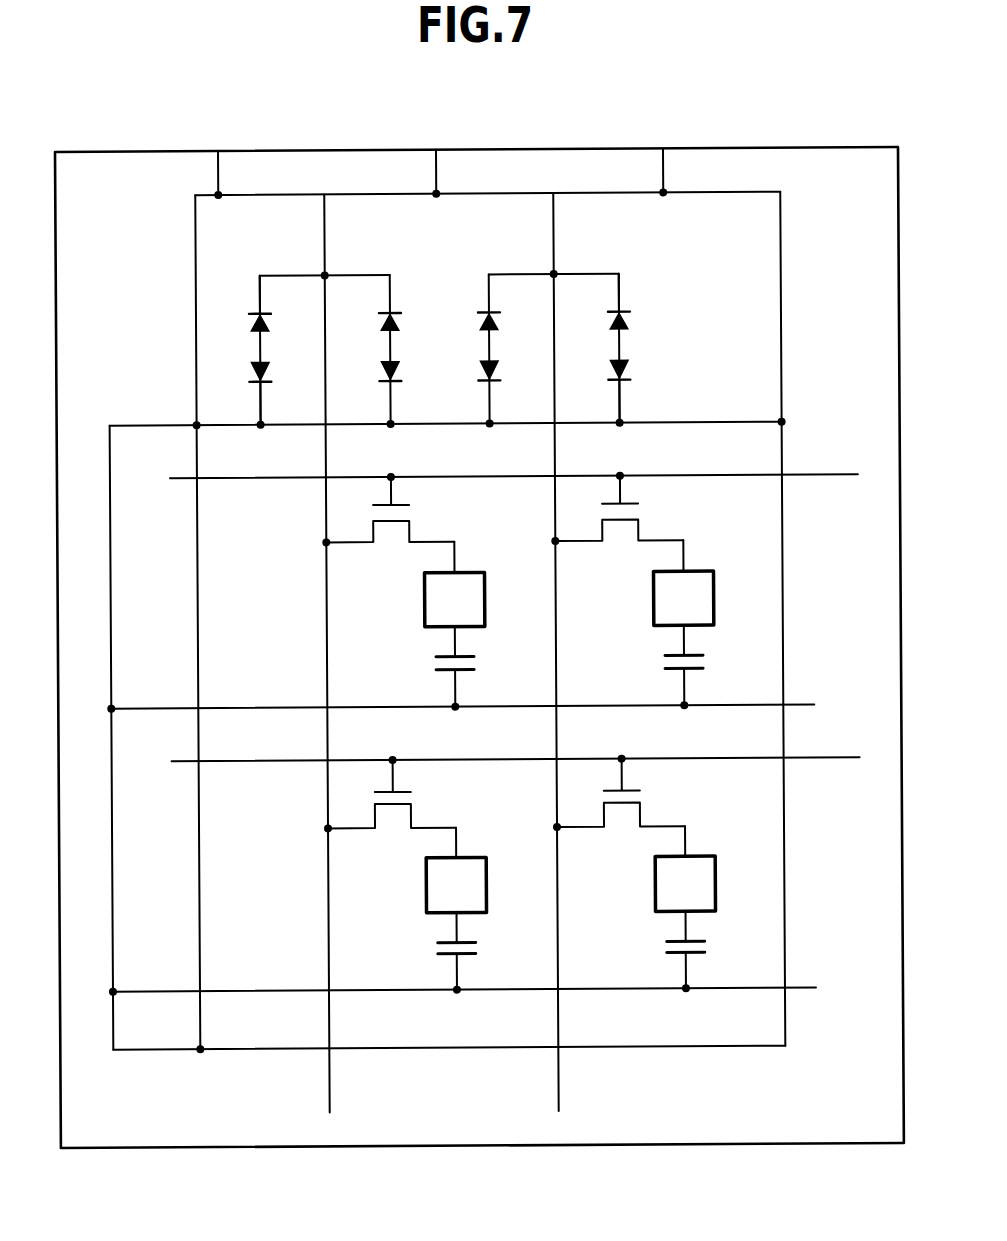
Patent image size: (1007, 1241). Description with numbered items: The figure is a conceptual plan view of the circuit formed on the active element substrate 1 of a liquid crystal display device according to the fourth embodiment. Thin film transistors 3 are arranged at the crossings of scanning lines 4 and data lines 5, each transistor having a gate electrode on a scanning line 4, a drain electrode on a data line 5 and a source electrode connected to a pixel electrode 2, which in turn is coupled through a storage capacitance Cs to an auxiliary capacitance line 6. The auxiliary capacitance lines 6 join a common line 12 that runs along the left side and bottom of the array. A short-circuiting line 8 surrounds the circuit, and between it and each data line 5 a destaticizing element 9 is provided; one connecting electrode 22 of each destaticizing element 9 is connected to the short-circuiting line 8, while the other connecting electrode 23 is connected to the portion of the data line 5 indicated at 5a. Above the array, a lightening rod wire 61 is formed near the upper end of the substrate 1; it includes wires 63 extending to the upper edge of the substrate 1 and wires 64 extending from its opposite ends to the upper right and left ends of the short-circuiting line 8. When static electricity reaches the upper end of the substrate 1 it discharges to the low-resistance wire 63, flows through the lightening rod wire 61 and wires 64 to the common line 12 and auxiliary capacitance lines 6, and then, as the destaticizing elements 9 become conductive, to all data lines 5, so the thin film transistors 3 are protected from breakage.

The active element substrate 1 is at (719, 151).
The pixel electrode 2 is at (483, 601).
The thin film transistor 3 is at (388, 549).
The scanning line 4 is at (827, 481).
The data line 5 is at (326, 1085).
The portion of data line 5a is at (326, 275).
The auxiliary capacitance line 6 is at (150, 708).
The short-circuiting line 8 is at (722, 428).
The destaticizing element 9 is at (250, 347).
The common line 12 is at (110, 572).
The connecting electrode 22 is at (259, 399).
The connecting electrode 23 is at (266, 276).
The lightening rod wire 61 is at (781, 262).
The wire 63 is at (219, 173).
The wire 64 is at (194, 249).
The storage capacitor Cs is at (590, 809).